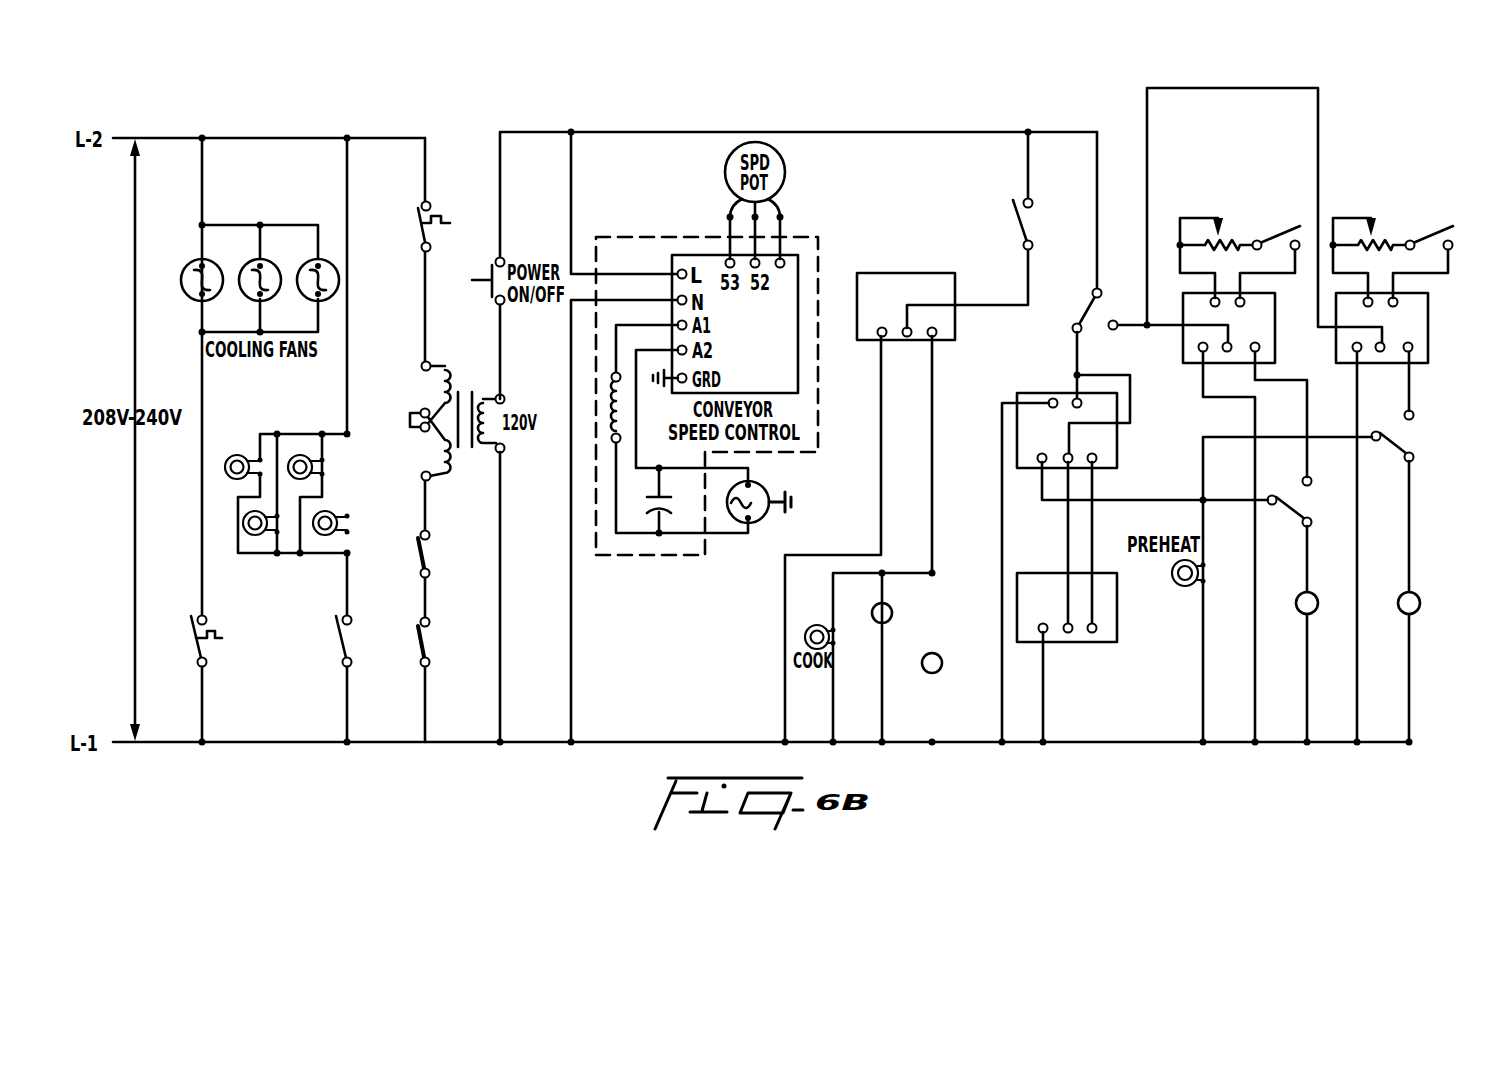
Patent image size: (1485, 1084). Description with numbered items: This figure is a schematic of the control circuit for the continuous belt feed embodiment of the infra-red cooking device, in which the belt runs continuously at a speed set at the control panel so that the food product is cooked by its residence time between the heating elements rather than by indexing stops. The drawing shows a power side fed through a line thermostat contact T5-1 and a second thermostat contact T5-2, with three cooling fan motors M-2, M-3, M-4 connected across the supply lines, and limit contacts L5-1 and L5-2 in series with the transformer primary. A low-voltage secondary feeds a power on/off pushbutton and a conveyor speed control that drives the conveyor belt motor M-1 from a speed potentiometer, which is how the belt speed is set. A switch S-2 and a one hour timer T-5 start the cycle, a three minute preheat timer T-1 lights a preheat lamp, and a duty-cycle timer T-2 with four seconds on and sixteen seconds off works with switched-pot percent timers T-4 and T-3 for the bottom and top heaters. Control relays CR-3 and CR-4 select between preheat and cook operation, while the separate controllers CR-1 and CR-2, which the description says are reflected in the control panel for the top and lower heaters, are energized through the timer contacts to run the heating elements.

The conveyor motor M-1 is at (762, 511).
The cooling fan motor M-2 is at (193, 293).
The cooling fan motor M-3 is at (252, 293).
The cooling fan motor M-4 is at (310, 293).
The thermostat contact shown cold manual reset T5-1 is at (402, 224).
The thermostat contact shown cold T5-2 is at (181, 656).
The limit switch L5-1 is at (445, 642).
The limit switch L5-2 is at (446, 558).
The controller CR-1 is at (1425, 617).
The controller CR-2 is at (1322, 617).
The control relay and contacts CR-3 is at (1110, 377).
The control relay and contacts CR-4 is at (871, 557).
The switch S-2 is at (1039, 191).
The 3 min preheat timer T-1 is at (1028, 394).
The 4 sec on / 16 sec off duty timer T-2 is at (1103, 657).
The top heater switched pot percent timer T-3 is at (1395, 230).
The bottom heater switched pot percent timer T-4 is at (1231, 230).
The 1 hr timer T-5 is at (906, 269).